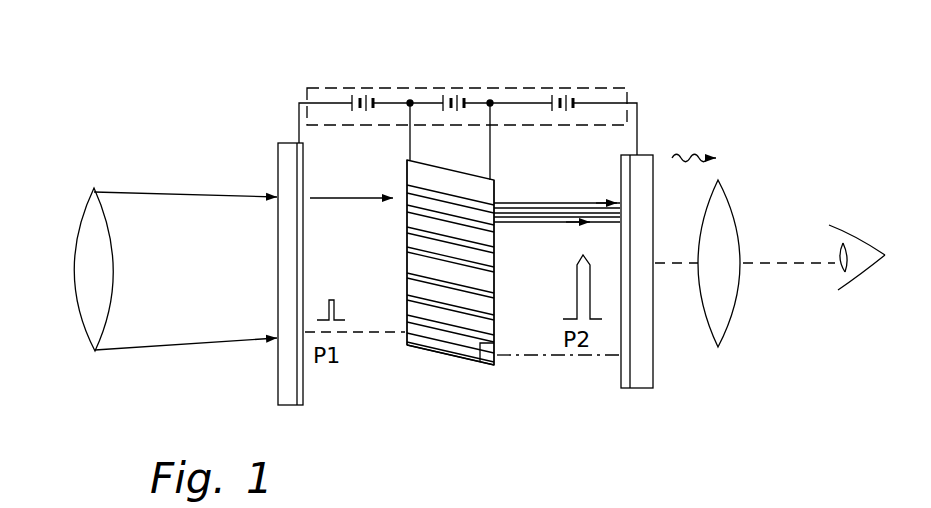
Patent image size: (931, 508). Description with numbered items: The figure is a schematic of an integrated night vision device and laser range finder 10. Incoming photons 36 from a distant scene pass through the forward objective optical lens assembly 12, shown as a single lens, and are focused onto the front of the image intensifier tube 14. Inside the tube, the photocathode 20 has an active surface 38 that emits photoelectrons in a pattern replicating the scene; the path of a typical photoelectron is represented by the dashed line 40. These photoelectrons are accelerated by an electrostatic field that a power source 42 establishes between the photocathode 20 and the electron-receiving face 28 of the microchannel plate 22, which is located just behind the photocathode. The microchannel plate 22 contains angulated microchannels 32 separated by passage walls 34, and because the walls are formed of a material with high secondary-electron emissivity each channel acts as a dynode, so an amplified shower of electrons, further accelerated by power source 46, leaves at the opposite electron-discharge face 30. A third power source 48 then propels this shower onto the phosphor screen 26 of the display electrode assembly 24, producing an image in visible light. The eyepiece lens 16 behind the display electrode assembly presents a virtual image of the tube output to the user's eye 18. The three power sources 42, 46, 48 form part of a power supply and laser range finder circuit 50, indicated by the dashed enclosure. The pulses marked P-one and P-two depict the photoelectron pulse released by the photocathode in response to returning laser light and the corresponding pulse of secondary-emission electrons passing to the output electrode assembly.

The integrated night vision device and laser range finder 10 is at (438, 62).
The objective optical lens assembly 12 is at (82, 325).
The image intensifier tube 14 is at (660, 130).
The eyepiece lens 16 is at (733, 205).
The user's eye 18 is at (842, 298).
The photocathode 20 is at (304, 390).
The microchannel plate 22 is at (455, 368).
The display electrode assembly 24 is at (641, 392).
The phosphor screen 26 is at (619, 378).
The electron-receiving face 28 is at (407, 298).
The electron-discharge face 30 is at (495, 283).
The microchannels 32 is at (479, 363).
The passage walls 34 is at (414, 348).
The photons 36 is at (211, 198).
The active surface 38 is at (305, 247).
The photoelectron path 40 is at (372, 198).
The power source 42 is at (363, 87).
The power source 46 is at (458, 86).
The power source 48 is at (572, 87).
The power supply and laser range finder circuit 50 is at (628, 86).